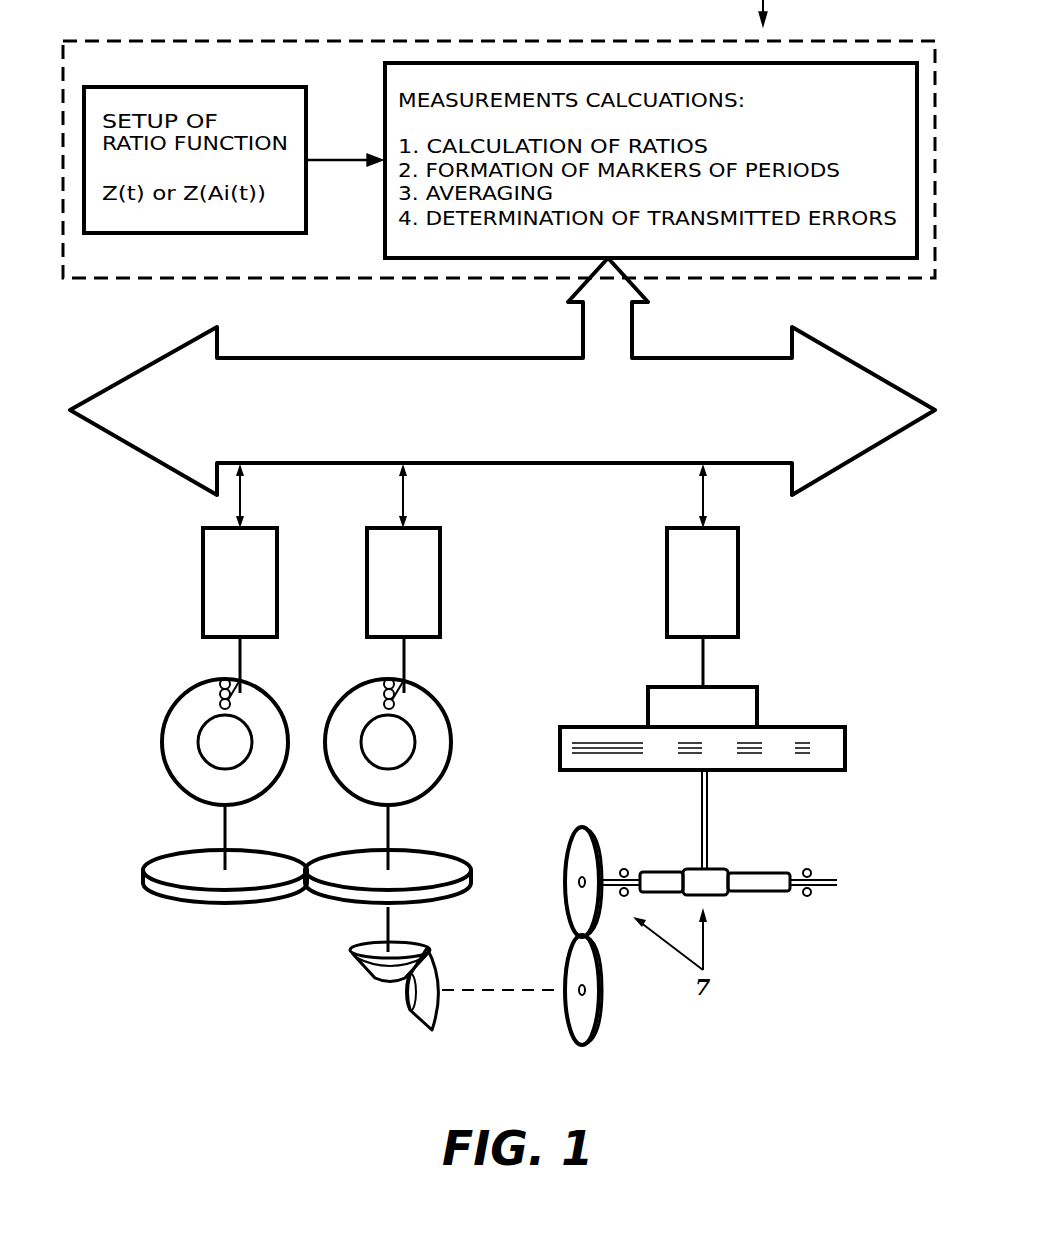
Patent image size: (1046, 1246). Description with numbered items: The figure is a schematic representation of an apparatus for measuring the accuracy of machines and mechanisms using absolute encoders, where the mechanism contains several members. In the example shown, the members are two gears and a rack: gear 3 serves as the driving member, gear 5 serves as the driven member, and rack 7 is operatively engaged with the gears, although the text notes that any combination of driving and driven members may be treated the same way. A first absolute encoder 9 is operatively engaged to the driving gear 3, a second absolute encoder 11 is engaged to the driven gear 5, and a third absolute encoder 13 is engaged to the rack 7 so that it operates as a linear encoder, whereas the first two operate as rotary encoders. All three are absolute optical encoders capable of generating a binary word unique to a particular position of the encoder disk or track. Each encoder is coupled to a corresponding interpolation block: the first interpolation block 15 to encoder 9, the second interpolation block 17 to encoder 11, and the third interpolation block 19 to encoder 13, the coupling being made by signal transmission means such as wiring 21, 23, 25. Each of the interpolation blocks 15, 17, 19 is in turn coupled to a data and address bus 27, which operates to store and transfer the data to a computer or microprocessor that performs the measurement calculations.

The driving gear 3 is at (199, 851).
The driven gear 5 is at (381, 851).
The rack 7 is at (455, 963).
The first absolute encoder 9 is at (193, 742).
The second absolute encoder 11 is at (424, 742).
The third absolute encoder 13 is at (740, 728).
The first interpolation block 15 is at (202, 582).
The second interpolation block 17 is at (441, 582).
The third interpolation block 19 is at (742, 582).
The wiring 21 is at (276, 668).
The wiring 23 is at (453, 668).
The wiring 25 is at (760, 662).
The data and address bus 27 is at (502, 376).